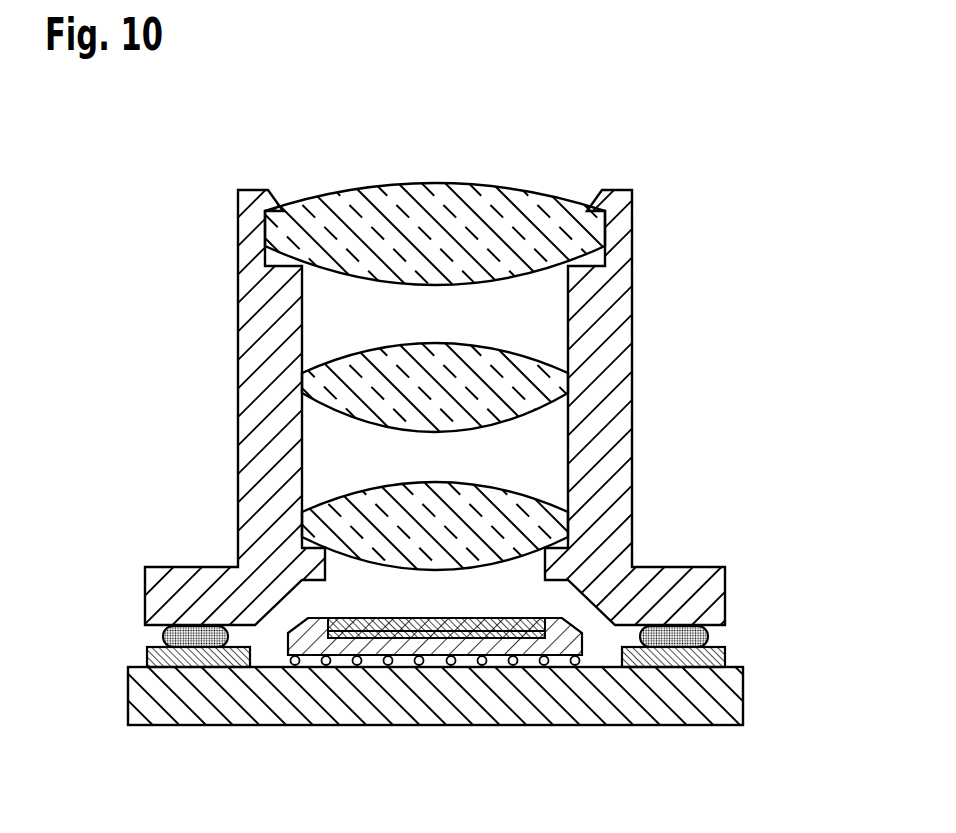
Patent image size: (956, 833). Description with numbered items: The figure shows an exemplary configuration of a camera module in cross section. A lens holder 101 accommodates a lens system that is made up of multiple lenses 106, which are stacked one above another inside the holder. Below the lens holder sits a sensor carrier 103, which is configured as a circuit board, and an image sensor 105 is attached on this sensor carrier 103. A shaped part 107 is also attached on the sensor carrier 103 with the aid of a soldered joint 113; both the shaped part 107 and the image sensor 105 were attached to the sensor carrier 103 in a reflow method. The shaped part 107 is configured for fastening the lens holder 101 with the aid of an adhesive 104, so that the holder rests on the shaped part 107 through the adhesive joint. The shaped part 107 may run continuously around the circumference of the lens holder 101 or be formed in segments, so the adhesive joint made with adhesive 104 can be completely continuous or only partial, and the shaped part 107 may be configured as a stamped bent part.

The lens holder 101 is at (255, 281).
The sensor carrier 103 is at (147, 695).
The adhesive 104 is at (163, 635).
The image sensor 105 is at (492, 637).
The lenses 106 is at (537, 235).
The shaped part 107 is at (145, 656).
The soldered joint 113 is at (725, 652).